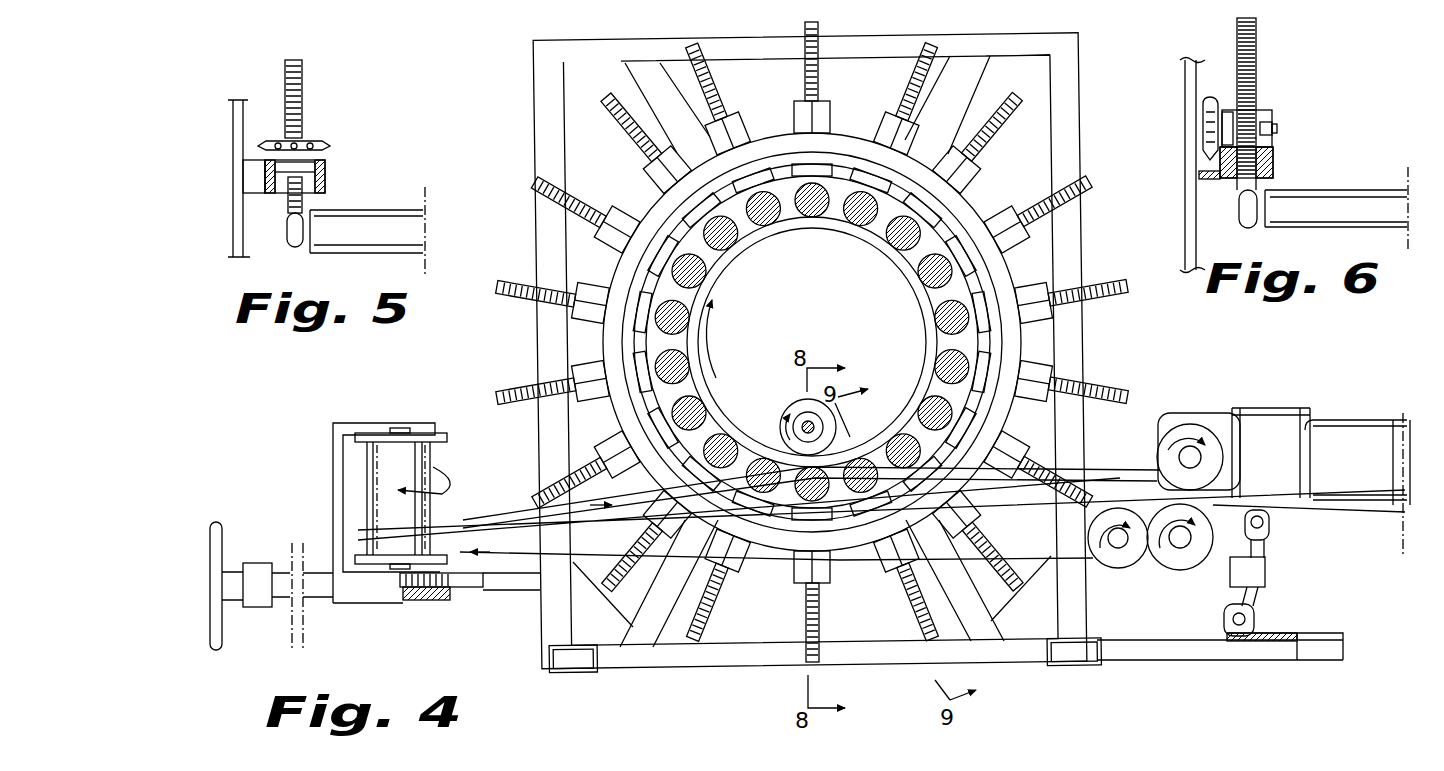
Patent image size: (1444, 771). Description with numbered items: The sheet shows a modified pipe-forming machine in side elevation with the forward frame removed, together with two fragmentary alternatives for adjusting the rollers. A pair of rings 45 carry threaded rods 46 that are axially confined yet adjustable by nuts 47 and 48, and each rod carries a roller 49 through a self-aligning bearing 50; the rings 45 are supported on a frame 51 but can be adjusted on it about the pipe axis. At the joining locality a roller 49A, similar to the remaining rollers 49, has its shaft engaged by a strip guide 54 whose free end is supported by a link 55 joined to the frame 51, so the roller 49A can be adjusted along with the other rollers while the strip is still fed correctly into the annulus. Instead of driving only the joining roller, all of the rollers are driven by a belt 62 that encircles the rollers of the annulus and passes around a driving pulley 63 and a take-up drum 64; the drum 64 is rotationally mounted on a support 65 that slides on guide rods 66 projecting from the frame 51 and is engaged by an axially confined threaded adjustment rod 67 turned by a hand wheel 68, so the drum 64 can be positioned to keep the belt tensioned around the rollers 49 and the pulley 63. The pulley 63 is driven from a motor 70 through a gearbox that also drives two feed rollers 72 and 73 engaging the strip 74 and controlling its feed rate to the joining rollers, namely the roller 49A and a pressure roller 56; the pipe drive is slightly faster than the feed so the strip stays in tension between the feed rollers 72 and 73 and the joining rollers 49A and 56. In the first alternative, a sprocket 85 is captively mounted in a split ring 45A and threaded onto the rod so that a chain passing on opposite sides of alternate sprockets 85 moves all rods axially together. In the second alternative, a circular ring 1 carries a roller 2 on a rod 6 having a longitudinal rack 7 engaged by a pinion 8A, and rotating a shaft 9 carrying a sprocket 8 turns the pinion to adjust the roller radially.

In FIG. 6, the circular ring 1 is at (1273, 160).
In FIG. 6, the roller 2 is at (1310, 197).
In FIG. 6, the rod 6 is at (1258, 76).
In FIG. 6, the longitudinal rack 7 is at (1258, 36).
In FIG. 6, the sprocket 8 is at (1207, 108).
In FIG. 6, the pinion 8A is at (1272, 126).
In FIG. 6, the shaft 9 is at (1277, 128).
In FIG. 4, the ring 45 is at (806, 317).
In FIG. 5, the split ring 45A is at (325, 180).
In FIG. 4, the rod 46 is at (822, 28).
In FIG. 5, the rod 46 is at (302, 90).
In FIG. 4, the nut 47 is at (825, 110).
In FIG. 4, the nut 48 is at (650, 262).
In FIG. 4, the roller 49 is at (735, 240).
In FIG. 5, the roller 49 is at (423, 230).
In FIG. 4, the roller 49A is at (808, 492).
In FIG. 5, the self-aligning bearing 50 is at (290, 235).
In FIG. 4, the frame 51 is at (1068, 58).
In FIG. 4, the guide 54 is at (850, 470).
In FIG. 4, the link 55 is at (1266, 572).
In FIG. 4, the pressure roller 56 is at (783, 432).
In FIG. 4, the belt 62 is at (460, 522).
In FIG. 4, the driving pulley 63 is at (1122, 565).
In FIG. 4, the take-up drum 64 is at (370, 450).
In FIG. 4, the support 65 is at (333, 505).
In FIG. 4, the guide rod 66 is at (502, 590).
In FIG. 4, the threaded adjustment rod 67 is at (458, 598).
In FIG. 4, the hand wheel 68 is at (223, 540).
In FIG. 4, the motor 70 is at (1357, 420).
In FIG. 4, the feed roller 72 is at (1163, 448).
In FIG. 4, the feed roller 73 is at (1185, 566).
In FIG. 4, the strip 74 is at (1370, 517).
In FIG. 5, the sprocket 85 is at (330, 146).